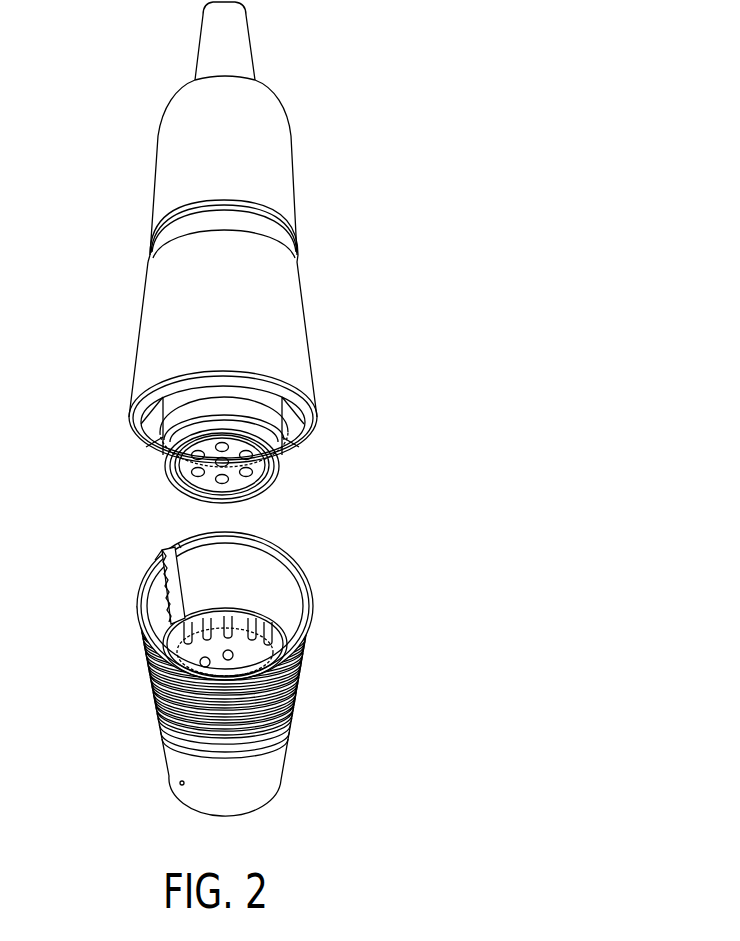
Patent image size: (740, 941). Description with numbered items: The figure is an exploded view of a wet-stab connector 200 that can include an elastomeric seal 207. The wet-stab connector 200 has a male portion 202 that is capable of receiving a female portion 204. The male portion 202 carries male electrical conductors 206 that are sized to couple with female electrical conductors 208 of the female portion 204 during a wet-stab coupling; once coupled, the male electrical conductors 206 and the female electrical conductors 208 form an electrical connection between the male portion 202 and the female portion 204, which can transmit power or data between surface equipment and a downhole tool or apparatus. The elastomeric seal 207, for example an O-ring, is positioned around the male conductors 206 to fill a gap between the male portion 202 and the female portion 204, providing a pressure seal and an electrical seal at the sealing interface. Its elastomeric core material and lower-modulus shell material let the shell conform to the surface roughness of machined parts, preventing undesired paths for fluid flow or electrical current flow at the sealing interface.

The wet-stab connector 200 is at (353, 203).
The male portion 202 is at (330, 127).
The female portion 204 is at (337, 587).
The male electrical conductors 206 is at (203, 483).
The elastomeric seal 207 is at (172, 478).
The female electrical conductors 208 is at (175, 643).